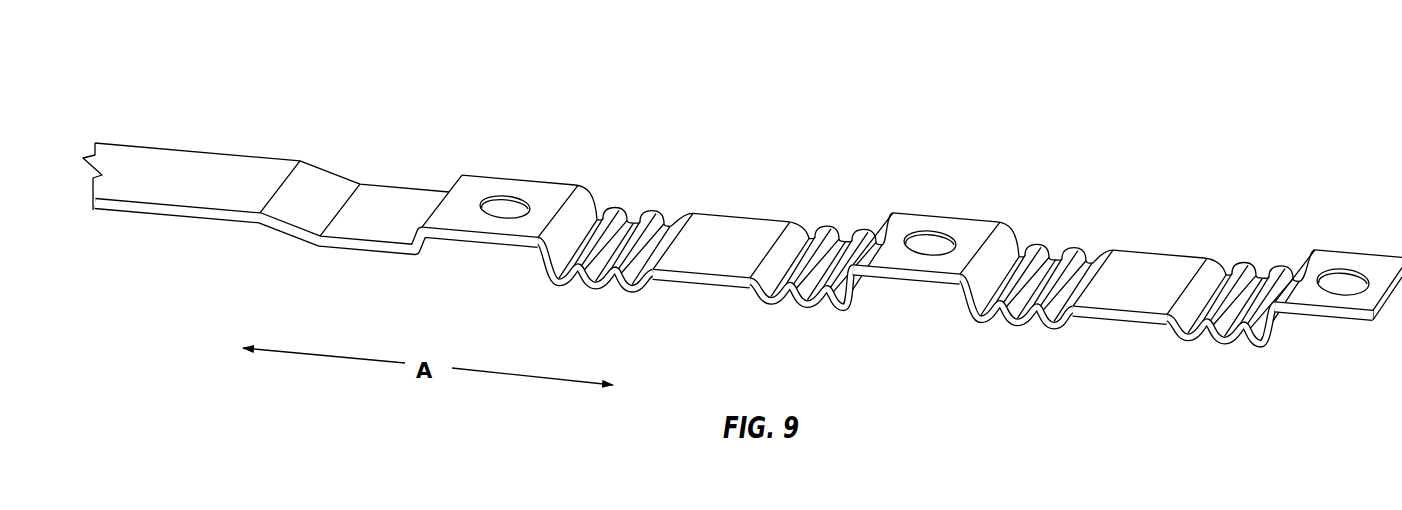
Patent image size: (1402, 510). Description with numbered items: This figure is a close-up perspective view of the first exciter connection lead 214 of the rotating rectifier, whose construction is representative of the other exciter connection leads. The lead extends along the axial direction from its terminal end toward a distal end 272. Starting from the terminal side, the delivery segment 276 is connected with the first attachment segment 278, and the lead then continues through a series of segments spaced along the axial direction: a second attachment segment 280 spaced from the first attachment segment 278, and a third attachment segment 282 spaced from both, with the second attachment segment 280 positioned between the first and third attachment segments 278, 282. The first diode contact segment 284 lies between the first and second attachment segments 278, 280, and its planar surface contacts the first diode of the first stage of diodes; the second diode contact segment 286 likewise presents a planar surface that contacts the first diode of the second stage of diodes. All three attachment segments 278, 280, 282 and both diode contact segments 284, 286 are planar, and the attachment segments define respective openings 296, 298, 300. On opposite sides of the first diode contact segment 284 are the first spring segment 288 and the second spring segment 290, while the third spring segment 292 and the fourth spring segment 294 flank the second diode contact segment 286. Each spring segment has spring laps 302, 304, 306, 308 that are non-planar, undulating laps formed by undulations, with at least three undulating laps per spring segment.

The first exciter connection lead 214 is at (343, 115).
The distal end 272 is at (1332, 140).
The delivery segment 276 is at (197, 218).
The first attachment segment 278 is at (509, 204).
The second attachment segment 280 is at (936, 246).
The third attachment segment 282 is at (1338, 294).
The first diode contact segment 284 is at (705, 290).
The second diode contact segment 286 is at (1127, 325).
The first spring segment 288 is at (658, 212).
The second spring segment 290 is at (872, 230).
The third spring segment 292 is at (1077, 253).
The fourth spring segment 294 is at (1272, 250).
The opening 296 is at (500, 200).
The opening 298 is at (937, 237).
The opening 300 is at (1350, 283).
The spring laps 302 is at (627, 200).
The spring laps 304 is at (837, 208).
The spring laps 306 is at (1042, 238).
The spring laps 308 is at (1238, 250).